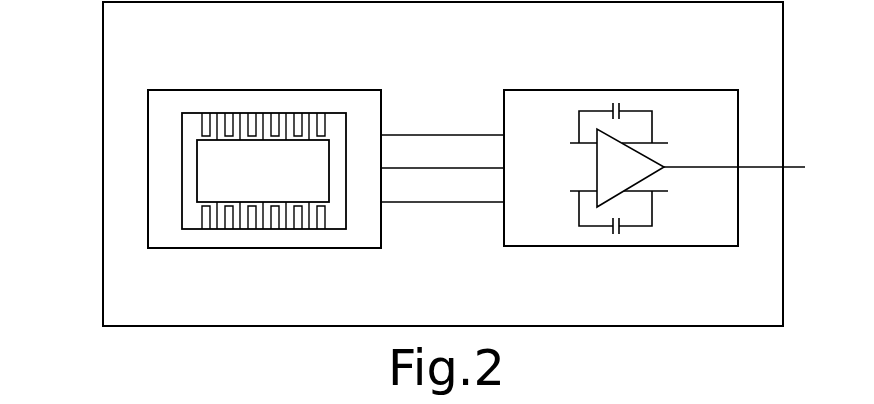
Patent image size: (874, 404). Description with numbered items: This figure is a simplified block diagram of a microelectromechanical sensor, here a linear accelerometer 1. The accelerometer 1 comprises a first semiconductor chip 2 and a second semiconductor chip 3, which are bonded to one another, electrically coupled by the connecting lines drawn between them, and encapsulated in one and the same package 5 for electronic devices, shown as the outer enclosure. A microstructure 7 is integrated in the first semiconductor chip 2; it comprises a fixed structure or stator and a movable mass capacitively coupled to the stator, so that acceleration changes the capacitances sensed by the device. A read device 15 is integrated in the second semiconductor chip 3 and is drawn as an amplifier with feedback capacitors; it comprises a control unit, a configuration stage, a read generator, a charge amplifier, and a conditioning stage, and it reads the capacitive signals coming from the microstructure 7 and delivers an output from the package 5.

The linear accelerometer 1 is at (79, 247).
The first semiconductor chip 2 is at (190, 249).
The second semiconductor chip 3 is at (621, 167).
The package 5 is at (103, 76).
The microstructure 7 is at (258, 106).
The read device 15 is at (658, 104).